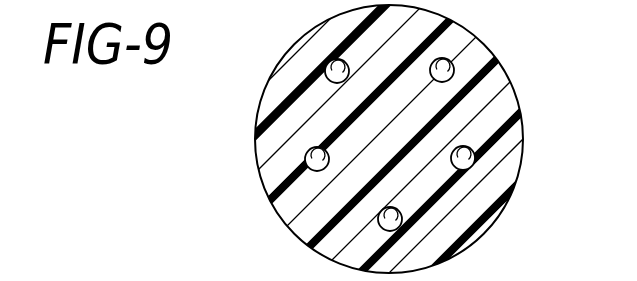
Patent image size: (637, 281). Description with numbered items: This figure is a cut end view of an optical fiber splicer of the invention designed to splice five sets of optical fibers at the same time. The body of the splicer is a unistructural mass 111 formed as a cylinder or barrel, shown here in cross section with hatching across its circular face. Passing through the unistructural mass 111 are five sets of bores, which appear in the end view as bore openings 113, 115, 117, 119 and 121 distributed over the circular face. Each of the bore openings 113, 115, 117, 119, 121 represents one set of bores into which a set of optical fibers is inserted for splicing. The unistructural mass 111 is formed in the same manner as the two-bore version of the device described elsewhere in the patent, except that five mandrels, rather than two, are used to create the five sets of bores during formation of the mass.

The unistructural mass 111 is at (257, 122).
The bore opening 113 is at (306, 163).
The bore opening 115 is at (327, 64).
The bore opening 117 is at (453, 65).
The bore opening 119 is at (402, 219).
The bore opening 121 is at (474, 154).